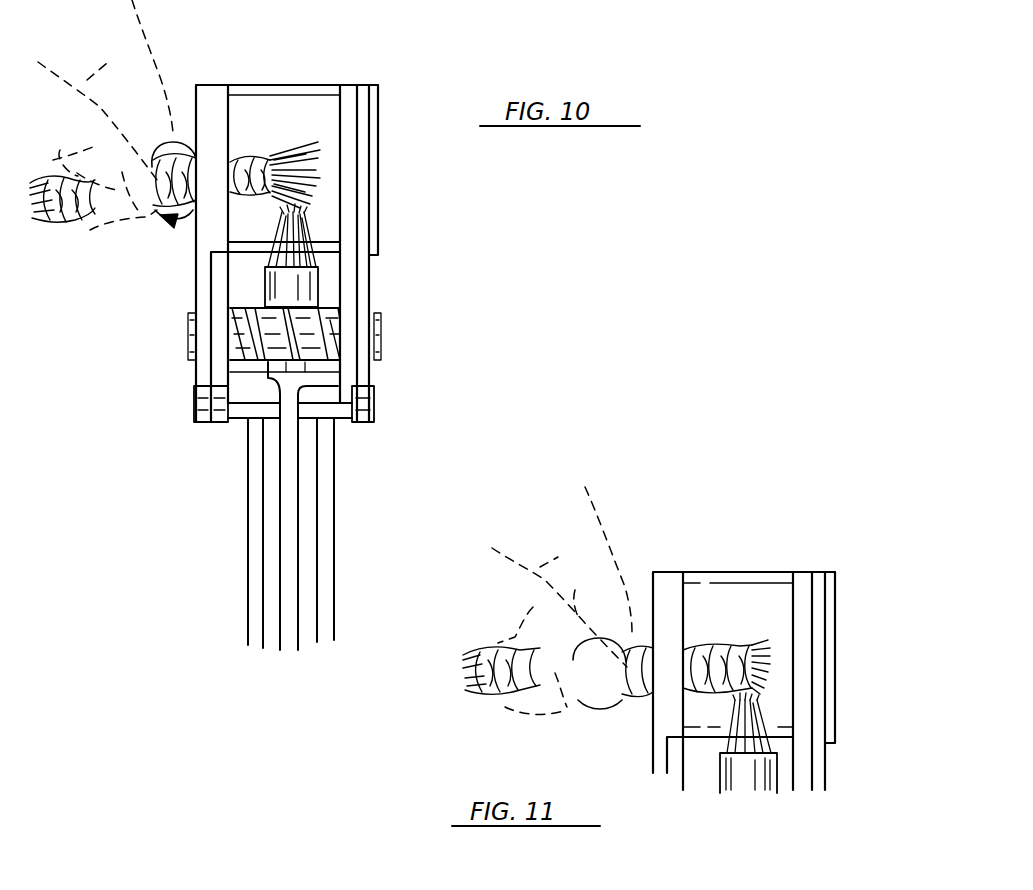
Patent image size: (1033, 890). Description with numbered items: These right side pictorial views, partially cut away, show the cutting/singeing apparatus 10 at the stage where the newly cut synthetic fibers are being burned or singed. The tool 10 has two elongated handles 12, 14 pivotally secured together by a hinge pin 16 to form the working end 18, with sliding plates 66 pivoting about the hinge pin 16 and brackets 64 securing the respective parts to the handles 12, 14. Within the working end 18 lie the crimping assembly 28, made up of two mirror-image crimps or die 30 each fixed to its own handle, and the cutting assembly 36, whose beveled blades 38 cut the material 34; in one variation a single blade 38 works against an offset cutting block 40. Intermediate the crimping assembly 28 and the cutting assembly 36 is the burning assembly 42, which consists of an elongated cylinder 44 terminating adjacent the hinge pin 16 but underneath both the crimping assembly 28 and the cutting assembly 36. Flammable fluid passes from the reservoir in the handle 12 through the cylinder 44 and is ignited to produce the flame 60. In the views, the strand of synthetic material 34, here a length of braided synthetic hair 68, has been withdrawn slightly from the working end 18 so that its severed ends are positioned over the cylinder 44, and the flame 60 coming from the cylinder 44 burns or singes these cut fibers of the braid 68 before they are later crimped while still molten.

In FIG. 10, the cutting/singeing apparatus 10 is at (226, 506).
In FIG. 11, the cutting/singeing apparatus 10 is at (850, 617).
In FIG. 10, the elongated handle 12 is at (247, 575).
In FIG. 10, the elongated handle 14 is at (303, 548).
In FIG. 10, the hinge pin 16 is at (382, 342).
In FIG. 10, the working end 18 is at (398, 196).
In FIG. 11, the working end 18 is at (669, 556).
In FIG. 10, the crimping assembly 28 is at (212, 80).
In FIG. 11, the crimping assembly 28 is at (679, 564).
In FIG. 10, the crimp or die 30 is at (196, 238).
In FIG. 11, the crimp or die 30 is at (648, 696).
In FIG. 10, the strand of synthetic material 34 is at (60, 222).
In FIG. 11, the strand of synthetic material 34 is at (480, 694).
In FIG. 10, the cutting assembly 36 is at (388, 89).
In FIG. 11, the cutting assembly 36 is at (843, 567).
In FIG. 10, the beveled blade 38 is at (368, 84).
In FIG. 11, the beveled blade 38 is at (822, 572).
In FIG. 10, the cutting block 40 is at (343, 84).
In FIG. 11, the cutting block 40 is at (807, 572).
In FIG. 10, the burning assembly 42 is at (255, 283).
In FIG. 11, the burning assembly 42 is at (716, 777).
In FIG. 10, the elongated cylinder 44 is at (322, 284).
In FIG. 11, the elongated cylinder 44 is at (778, 783).
In FIG. 10, the flame 60 is at (284, 224).
In FIG. 11, the flame 60 is at (730, 718).
In FIG. 10, the bracket 64 is at (255, 85).
In FIG. 11, the bracket 64 is at (740, 572).
In FIG. 10, the sliding plate 66 is at (192, 404).
In FIG. 10, the braided synthetic hair 68 is at (258, 160).
In FIG. 11, the braided synthetic hair 68 is at (717, 644).